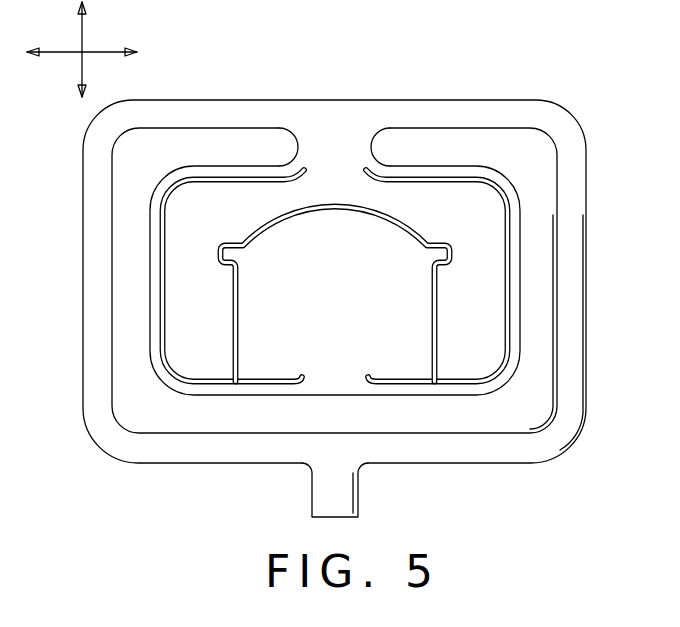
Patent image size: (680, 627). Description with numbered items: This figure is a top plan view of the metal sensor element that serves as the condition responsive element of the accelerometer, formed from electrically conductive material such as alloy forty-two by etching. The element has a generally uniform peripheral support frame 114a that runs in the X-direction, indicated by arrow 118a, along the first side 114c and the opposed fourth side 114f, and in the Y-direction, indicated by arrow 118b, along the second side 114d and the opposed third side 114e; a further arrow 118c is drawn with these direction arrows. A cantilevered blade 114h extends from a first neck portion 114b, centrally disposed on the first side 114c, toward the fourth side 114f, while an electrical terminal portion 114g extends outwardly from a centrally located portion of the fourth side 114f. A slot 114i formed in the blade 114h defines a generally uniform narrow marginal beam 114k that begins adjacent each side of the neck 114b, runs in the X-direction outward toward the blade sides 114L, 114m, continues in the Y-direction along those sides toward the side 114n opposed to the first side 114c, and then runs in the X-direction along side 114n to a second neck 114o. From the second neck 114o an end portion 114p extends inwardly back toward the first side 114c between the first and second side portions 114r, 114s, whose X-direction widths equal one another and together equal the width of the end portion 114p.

The peripheral support frame 114a is at (576, 302).
The first neck portion 114b is at (342, 146).
The first side 114c is at (333, 100).
The second side 114d is at (82, 340).
The third side 114e is at (586, 155).
The fourth side 114f is at (218, 463).
The electrical terminal portion 114g is at (247, 238).
The cantilevered blade 114h is at (502, 172).
The slot 114i is at (193, 177).
The marginal beam 114k is at (249, 173).
The side of the blade 114L is at (150, 338).
The side of the blade 114m is at (522, 250).
The side of the blade 114n is at (268, 395).
The second neck 114o is at (333, 379).
The end portion 114p is at (349, 317).
The first side portion 114r is at (217, 322).
The second side portion 114s is at (495, 308).
The arrow 118a is at (103, 51).
The arrow 118b is at (82, 67).
The third direction 118c is at (82, 52).